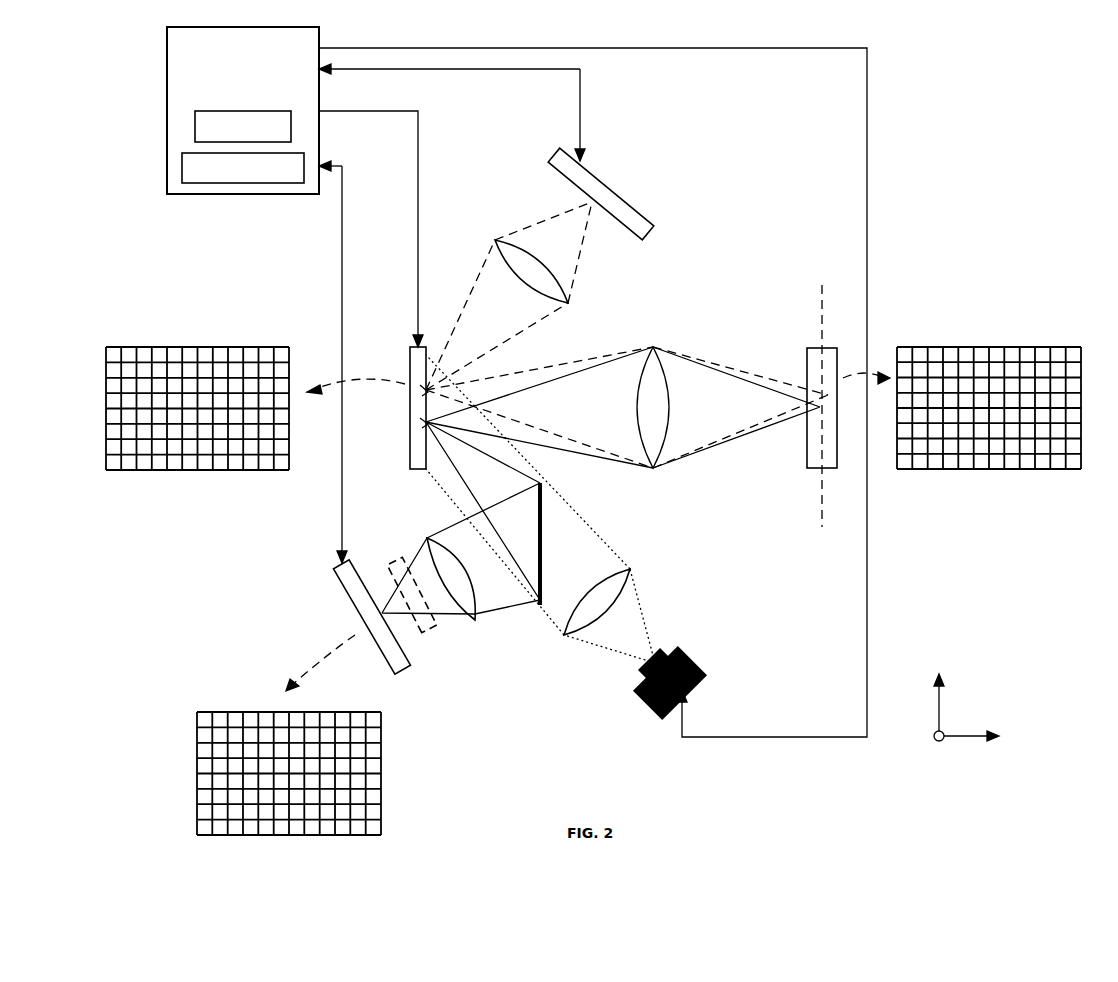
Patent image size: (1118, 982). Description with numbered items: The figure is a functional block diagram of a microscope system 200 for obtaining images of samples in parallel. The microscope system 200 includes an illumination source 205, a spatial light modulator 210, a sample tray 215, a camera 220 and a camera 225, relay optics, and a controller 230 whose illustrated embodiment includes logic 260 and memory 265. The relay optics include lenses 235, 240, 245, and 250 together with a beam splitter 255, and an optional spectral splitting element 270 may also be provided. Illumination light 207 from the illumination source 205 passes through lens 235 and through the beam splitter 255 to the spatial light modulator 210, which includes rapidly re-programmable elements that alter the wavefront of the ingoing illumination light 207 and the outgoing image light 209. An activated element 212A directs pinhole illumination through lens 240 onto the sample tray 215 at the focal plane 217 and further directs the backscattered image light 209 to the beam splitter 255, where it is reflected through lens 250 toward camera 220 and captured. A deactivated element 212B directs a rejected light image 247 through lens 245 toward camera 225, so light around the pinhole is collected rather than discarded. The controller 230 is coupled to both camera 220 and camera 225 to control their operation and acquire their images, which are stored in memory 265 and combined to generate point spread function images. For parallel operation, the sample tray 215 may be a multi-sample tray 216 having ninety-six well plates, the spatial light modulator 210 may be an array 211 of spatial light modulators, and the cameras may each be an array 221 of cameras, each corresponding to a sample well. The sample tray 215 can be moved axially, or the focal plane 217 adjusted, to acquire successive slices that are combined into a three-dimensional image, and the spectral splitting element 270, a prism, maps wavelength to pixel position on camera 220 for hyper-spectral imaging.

The microscope system 200 is at (958, 99).
The illumination source 205 is at (692, 658).
The illumination light 207 is at (612, 655).
The image light 209 is at (548, 382).
The spatial light modulator 210 is at (408, 380).
The array of spatial light modulators 211 is at (160, 322).
The activated element 212A is at (413, 420).
The deactivated element 212B is at (413, 392).
The sample tray 215 is at (812, 346).
The multi-sample tray 216 is at (1014, 316).
The focal plane 217 is at (823, 303).
The camera 220 is at (337, 592).
The array of cameras 221 is at (233, 694).
The camera 225 is at (620, 198).
The controller 230 is at (376, 295).
The lens 235 is at (630, 567).
The lens 240 is at (676, 368).
The lens 245 is at (568, 300).
The rejected light image 247 is at (580, 255).
The lens 250 is at (477, 613).
The beam splitter 255 is at (542, 520).
The logic 260 is at (243, 126).
The memory 265 is at (243, 168).
The spectral splitting element 270 is at (430, 632).